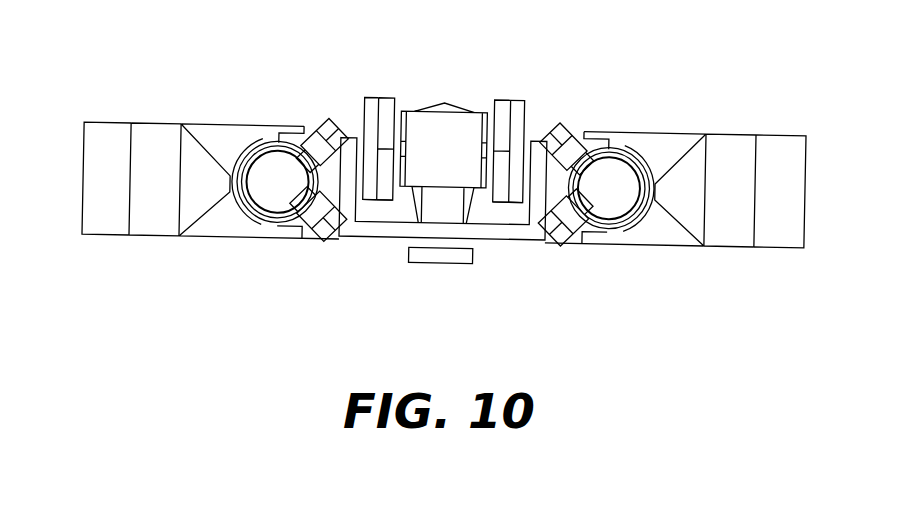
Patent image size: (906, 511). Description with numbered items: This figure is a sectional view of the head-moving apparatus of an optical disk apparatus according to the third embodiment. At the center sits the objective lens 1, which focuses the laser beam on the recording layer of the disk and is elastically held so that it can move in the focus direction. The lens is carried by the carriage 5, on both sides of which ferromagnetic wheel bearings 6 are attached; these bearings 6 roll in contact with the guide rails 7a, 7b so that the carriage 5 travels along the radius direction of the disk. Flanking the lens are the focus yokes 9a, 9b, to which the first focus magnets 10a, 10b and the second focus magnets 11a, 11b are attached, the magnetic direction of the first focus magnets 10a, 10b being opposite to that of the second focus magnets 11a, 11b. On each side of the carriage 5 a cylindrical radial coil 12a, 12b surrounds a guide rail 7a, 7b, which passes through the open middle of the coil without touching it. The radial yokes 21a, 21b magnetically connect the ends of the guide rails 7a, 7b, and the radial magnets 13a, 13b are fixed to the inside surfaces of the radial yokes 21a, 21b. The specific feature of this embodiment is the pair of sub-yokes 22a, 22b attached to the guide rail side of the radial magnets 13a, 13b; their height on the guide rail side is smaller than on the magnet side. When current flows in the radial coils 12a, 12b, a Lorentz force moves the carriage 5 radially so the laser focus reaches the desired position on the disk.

The objective lens 1 is at (447, 108).
The carriage 5 is at (405, 232).
The bearings 6 is at (320, 135).
The guide rail 7a is at (614, 210).
The guide rail 7b is at (268, 205).
The focus yoke 9a is at (522, 112).
The focus yoke 9b is at (368, 105).
The first focus magnet 10a is at (502, 108).
The first focus magnet 10b is at (387, 105).
The second focus magnet 11a is at (503, 202).
The second focus magnet 11b is at (383, 200).
The radial coil 12a is at (628, 150).
The radial coil 12b is at (258, 146).
The radial magnet 13a is at (723, 240).
The radial magnet 13b is at (137, 228).
The radial yoke 21a is at (778, 242).
The radial yoke 21b is at (90, 233).
The sub-yoke 22a is at (685, 222).
The sub-yoke 22b is at (192, 218).